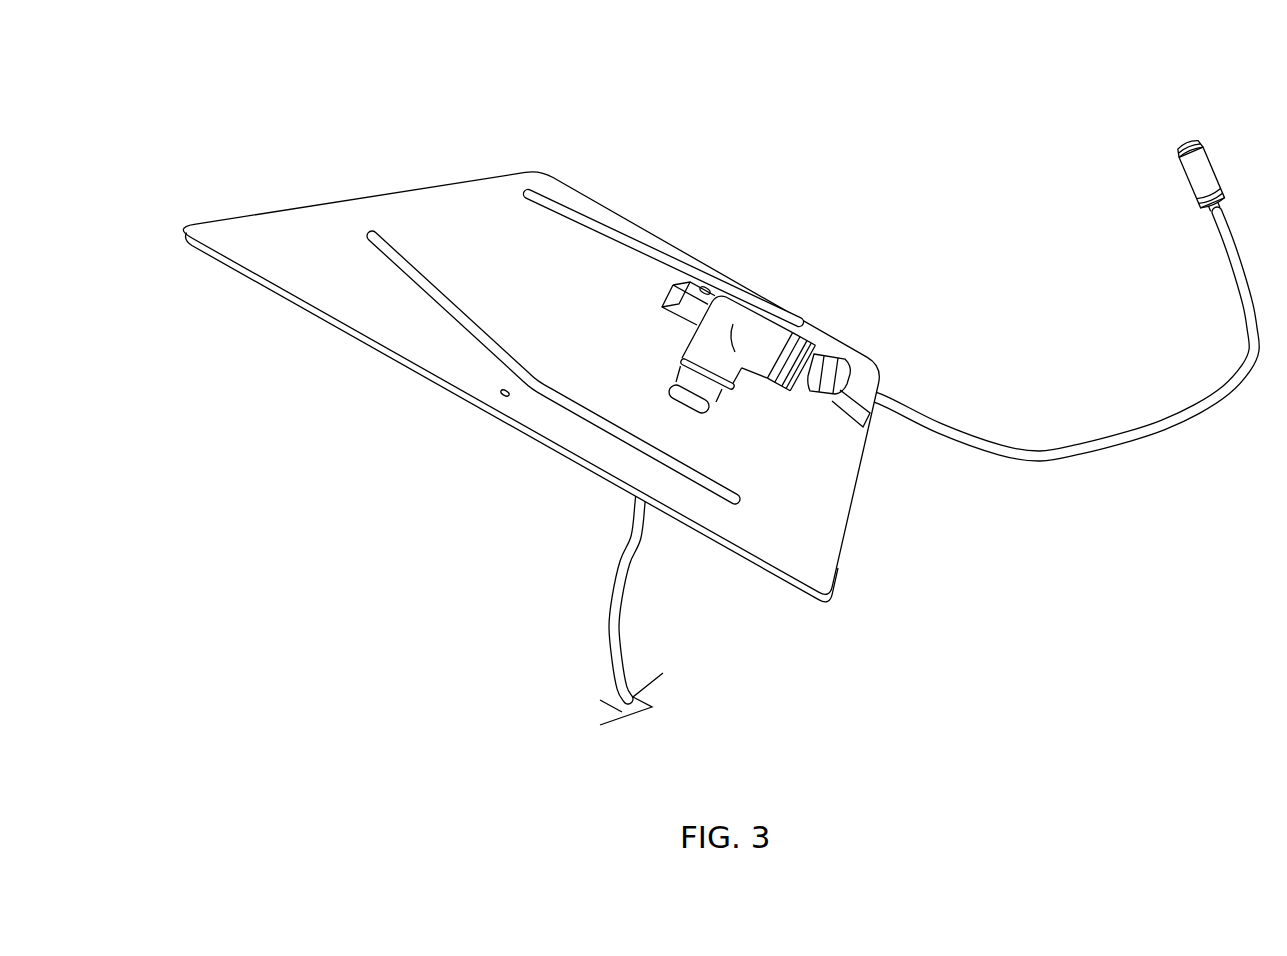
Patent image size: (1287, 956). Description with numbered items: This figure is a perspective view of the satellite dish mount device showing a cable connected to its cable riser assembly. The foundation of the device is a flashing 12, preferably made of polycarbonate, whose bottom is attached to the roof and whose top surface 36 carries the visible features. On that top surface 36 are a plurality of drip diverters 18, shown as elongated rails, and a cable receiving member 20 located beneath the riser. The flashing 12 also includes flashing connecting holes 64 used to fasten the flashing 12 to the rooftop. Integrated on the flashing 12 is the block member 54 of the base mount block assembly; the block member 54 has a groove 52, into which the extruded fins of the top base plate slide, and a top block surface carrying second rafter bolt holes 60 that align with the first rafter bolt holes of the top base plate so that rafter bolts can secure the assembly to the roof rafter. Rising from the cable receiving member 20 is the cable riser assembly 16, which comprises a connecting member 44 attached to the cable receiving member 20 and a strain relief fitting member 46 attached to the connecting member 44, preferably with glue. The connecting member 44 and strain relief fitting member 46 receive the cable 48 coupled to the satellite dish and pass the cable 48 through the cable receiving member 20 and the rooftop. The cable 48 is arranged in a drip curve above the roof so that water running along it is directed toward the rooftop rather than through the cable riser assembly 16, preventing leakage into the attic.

The flashing 12 is at (302, 306).
The cable riser assembly 16 is at (794, 334).
The drip diverters 18 is at (600, 227).
The cable receiving member 20 is at (713, 407).
The top surface 36 is at (590, 318).
The connecting member 44 is at (755, 312).
The strain relief fitting member 46 is at (835, 367).
The cable 48 is at (620, 555).
The groove 52 is at (672, 293).
The block member 54 is at (717, 293).
The second rafter bolt holes 60 is at (703, 287).
The flashing connecting holes 64 is at (501, 394).